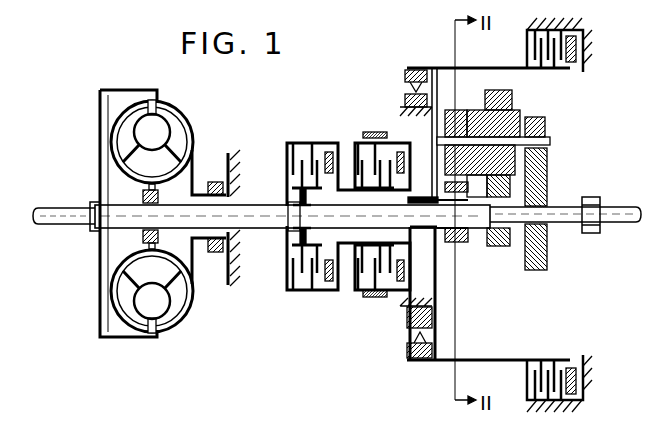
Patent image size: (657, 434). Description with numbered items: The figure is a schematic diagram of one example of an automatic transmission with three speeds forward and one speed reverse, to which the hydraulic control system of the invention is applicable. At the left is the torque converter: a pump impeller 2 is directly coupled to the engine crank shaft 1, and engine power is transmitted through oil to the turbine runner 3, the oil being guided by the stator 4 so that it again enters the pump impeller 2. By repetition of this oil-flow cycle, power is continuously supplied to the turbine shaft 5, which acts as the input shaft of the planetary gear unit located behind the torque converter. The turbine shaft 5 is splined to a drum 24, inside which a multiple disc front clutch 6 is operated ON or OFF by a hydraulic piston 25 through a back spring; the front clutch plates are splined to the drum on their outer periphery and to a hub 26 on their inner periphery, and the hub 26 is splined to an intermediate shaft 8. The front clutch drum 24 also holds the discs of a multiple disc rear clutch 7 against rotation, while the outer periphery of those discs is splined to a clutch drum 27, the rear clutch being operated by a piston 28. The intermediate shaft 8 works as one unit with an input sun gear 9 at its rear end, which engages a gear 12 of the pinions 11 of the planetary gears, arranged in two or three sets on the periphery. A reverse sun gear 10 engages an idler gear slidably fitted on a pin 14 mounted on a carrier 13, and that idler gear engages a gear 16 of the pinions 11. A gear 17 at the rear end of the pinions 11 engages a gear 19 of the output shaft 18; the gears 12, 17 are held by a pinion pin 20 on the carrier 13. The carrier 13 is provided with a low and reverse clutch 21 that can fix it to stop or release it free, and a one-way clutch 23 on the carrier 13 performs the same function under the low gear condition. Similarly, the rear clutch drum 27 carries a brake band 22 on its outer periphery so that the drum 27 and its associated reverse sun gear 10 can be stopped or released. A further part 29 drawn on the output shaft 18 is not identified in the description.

The engine crank shaft 1 is at (42, 222).
The pump impeller 2 is at (177, 117).
The turbine runner 3 is at (118, 124).
The stator 4 is at (137, 166).
The turbine shaft 5 is at (268, 206).
The front clutch 6 is at (300, 275).
The rear clutch 7 is at (373, 268).
The intermediate shaft 8 is at (440, 242).
The input sun gear 9 is at (496, 247).
The reverse sun gear 10 is at (458, 243).
The pinions 11 is at (519, 109).
The gear 12 is at (511, 95).
The carrier 13 is at (432, 172).
The pin 14 is at (514, 185).
The gear 16 is at (458, 109).
The gear 17 is at (546, 124).
The output shaft 18 is at (562, 224).
The gear 19 is at (547, 168).
The pinion pin 20 is at (548, 141).
The low and reverse clutch 21 is at (578, 45).
The brake band 22 is at (380, 131).
The one-way clutch 23 is at (406, 104).
The drum 24 is at (300, 143).
The hydraulic piston 25 is at (348, 143).
The hub 26 is at (300, 236).
The clutch drum 27 is at (399, 290).
The piston 28 is at (404, 270).
The collar 29 is at (590, 234).